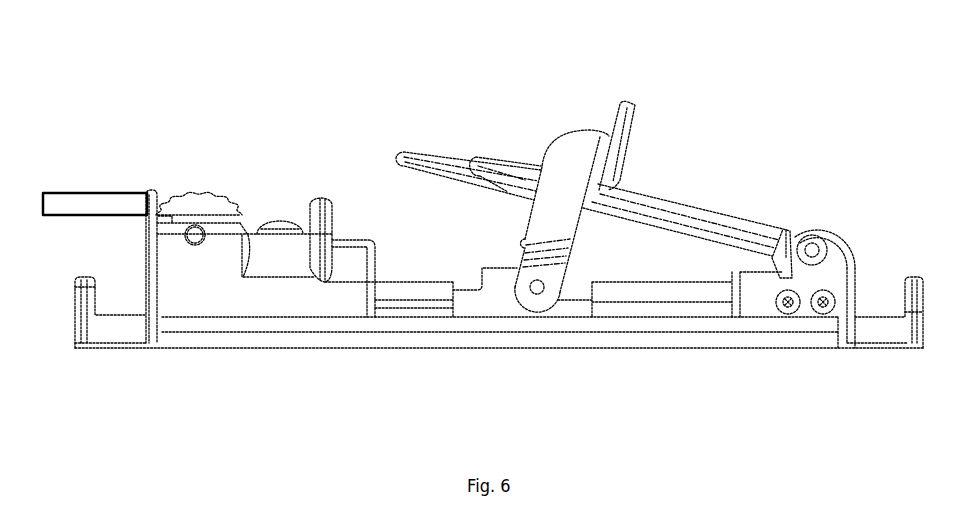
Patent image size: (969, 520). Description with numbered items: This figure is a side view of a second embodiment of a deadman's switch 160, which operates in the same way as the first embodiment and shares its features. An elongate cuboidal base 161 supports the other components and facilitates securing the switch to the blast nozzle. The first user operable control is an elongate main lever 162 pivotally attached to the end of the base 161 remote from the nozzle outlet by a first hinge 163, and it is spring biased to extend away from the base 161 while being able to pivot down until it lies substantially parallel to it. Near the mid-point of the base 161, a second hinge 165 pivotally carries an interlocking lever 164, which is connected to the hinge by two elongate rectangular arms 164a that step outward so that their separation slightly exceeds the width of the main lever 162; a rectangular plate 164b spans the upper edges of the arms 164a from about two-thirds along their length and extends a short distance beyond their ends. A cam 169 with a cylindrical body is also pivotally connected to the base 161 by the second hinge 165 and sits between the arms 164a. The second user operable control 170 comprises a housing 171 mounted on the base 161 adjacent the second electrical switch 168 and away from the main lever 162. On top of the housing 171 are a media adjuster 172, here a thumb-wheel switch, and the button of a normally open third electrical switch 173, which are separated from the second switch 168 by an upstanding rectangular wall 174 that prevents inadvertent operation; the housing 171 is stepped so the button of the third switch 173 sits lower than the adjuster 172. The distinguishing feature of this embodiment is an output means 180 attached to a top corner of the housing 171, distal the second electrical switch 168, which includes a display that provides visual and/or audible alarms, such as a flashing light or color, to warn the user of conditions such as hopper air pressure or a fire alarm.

The deadman's switch 160 is at (731, 91).
The base 161 is at (528, 348).
The main lever 162 is at (663, 198).
The first hinge 163 is at (810, 243).
The interlocking lever 164 is at (555, 142).
The arms 164a is at (565, 222).
The plate 164b is at (618, 112).
The second hinge 165 is at (543, 285).
The second electrical switch 168 is at (353, 239).
The cam 169 is at (519, 243).
The second user operable control 170 is at (125, 249).
The housing 171 is at (242, 224).
The media adjuster 172 is at (190, 193).
The third electrical switch 173 is at (278, 223).
The wall 174 is at (318, 199).
The output means 180 is at (92, 200).